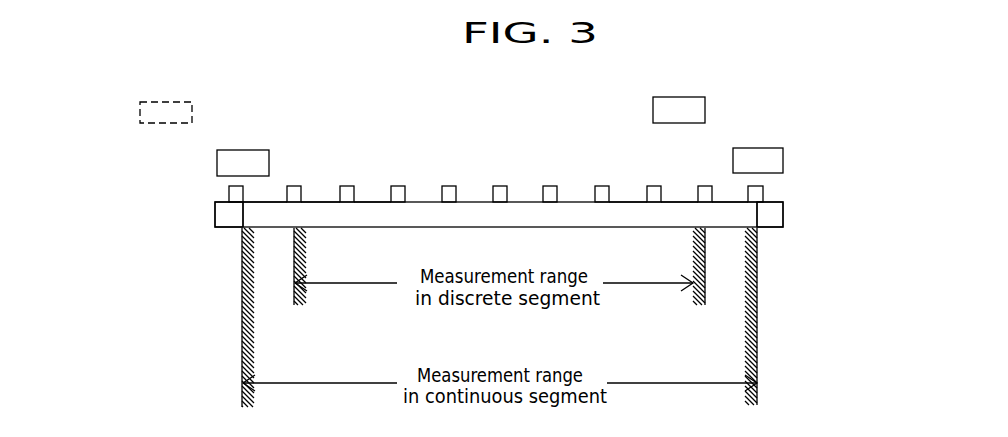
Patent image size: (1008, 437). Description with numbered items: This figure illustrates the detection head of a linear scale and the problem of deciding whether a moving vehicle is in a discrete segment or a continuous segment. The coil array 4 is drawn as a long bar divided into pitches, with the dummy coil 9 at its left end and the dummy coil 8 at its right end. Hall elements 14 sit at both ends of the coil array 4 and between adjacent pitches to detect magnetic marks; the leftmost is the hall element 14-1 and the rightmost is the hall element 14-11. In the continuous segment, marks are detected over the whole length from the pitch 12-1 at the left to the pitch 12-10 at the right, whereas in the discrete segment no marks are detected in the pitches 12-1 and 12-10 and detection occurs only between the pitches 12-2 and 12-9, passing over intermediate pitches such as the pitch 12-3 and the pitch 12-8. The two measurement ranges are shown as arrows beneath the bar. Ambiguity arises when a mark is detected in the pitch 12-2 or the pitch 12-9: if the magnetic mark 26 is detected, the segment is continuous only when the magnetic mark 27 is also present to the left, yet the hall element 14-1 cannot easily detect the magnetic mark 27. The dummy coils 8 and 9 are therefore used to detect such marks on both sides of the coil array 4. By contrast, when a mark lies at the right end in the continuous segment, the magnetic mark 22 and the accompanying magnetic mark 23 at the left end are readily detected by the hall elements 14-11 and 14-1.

The coil array 4 is at (524, 198).
The dummy coil 8 is at (768, 226).
The dummy coil 9 is at (228, 220).
The pitch 12-1 is at (273, 213).
The pitch 12-2 is at (323, 195).
The pitch 12-3 is at (372, 195).
The pitch 12-8 is at (627, 193).
The pitch 12-9 is at (680, 193).
The pitch 12-10 is at (727, 222).
The hall element 14 is at (300, 187).
The hall element 14-1 is at (232, 193).
The hall element 14-11 is at (763, 191).
The magnetic mark 22 is at (763, 148).
The magnetic mark 23 is at (257, 150).
The magnetic mark 26 is at (706, 110).
The magnetic mark 27 is at (193, 112).